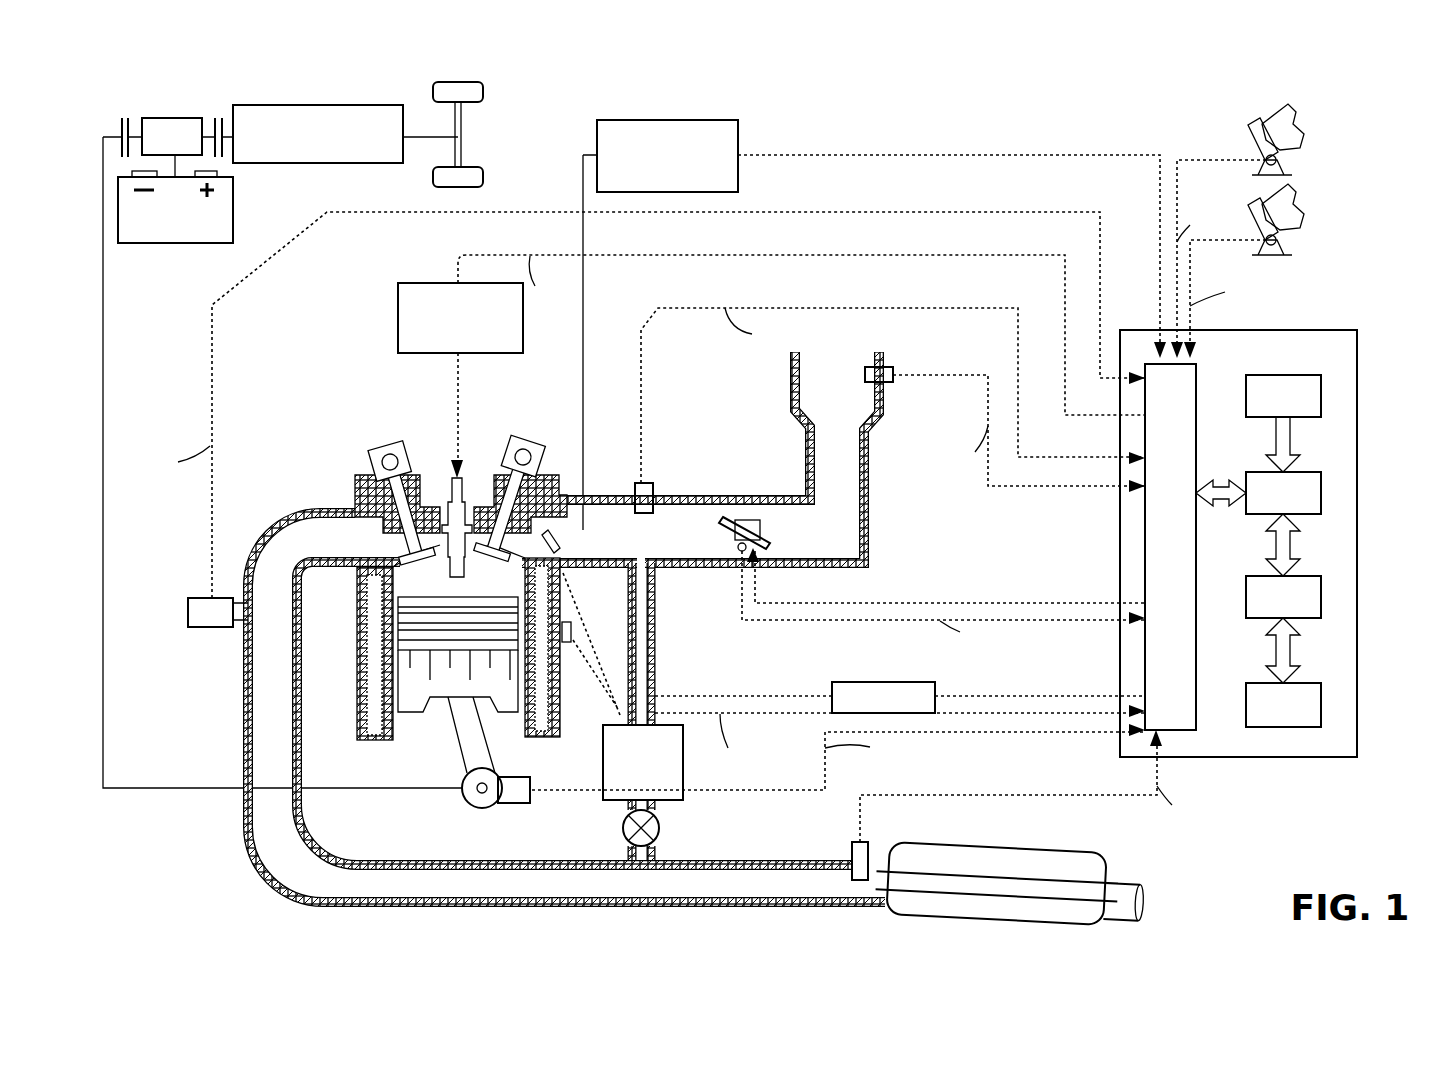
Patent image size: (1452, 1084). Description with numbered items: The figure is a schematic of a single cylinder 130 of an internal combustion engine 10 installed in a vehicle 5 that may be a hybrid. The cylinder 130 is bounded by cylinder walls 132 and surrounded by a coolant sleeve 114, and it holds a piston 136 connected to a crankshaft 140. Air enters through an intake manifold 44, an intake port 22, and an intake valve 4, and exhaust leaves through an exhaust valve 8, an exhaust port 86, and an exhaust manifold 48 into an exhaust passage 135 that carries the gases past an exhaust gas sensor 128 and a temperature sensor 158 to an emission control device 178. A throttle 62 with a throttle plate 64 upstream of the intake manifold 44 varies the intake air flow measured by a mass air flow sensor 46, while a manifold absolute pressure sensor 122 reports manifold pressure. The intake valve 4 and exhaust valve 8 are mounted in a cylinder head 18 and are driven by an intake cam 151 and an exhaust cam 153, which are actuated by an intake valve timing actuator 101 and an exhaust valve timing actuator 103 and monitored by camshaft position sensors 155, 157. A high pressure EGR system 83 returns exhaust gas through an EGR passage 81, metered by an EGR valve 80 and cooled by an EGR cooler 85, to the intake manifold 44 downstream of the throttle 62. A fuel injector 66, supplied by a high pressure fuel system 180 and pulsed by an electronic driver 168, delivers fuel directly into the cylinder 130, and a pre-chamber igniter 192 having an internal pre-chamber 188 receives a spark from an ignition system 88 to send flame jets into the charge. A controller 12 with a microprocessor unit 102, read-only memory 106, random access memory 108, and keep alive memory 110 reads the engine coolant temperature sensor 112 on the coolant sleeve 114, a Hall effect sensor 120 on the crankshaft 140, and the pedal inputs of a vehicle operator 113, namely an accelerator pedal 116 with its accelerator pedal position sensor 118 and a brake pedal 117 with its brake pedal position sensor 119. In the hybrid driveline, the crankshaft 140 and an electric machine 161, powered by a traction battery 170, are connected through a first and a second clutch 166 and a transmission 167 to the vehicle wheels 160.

The intake valve 4 is at (494, 520).
The vehicle 5 is at (1405, 88).
The exhaust valve 8 is at (366, 526).
The internal combustion engine 10 is at (312, 418).
The controller 12 is at (1357, 336).
The cylinder head 18 is at (355, 481).
The intake port 22 is at (590, 541).
The intake manifold 44 is at (670, 541).
The mass air flow sensor 46 is at (885, 367).
The exhaust manifold 48 is at (263, 714).
The throttle 62 is at (753, 518).
The throttle plate 64 is at (727, 519).
The fuel injector 66 is at (522, 566).
The EGR valve 80 is at (659, 828).
The EGR passage 81 is at (628, 608).
The high pressure EGR system 83 is at (667, 668).
The EGR cooler 85 is at (683, 758).
The exhaust port 86 is at (306, 551).
The ignition system 88 is at (430, 283).
The intake valve timing actuator 101 is at (540, 450).
The microprocessor unit 102 is at (1321, 486).
The exhaust valve timing actuator 103 is at (376, 446).
The read-only memory 106 is at (1321, 386).
The random access memory 108 is at (1200, 366).
The keep alive memory 110 is at (1321, 701).
The ECT sensor 112 is at (567, 643).
The vehicle operator 113 is at (1300, 204).
The coolant sleeve 114 is at (560, 646).
The accelerator pedal 116 is at (1257, 132).
The brake pedal 117 is at (1257, 212).
The accelerator pedal position sensor 118 is at (1278, 161).
The brake pedal position sensor 119 is at (1278, 241).
The Hall effect sensor 120 is at (518, 803).
The MAP sensor 122 is at (645, 483).
The exhaust gas sensor 128 is at (188, 606).
The cylinder 130 is at (452, 587).
The cylinder walls 132 is at (400, 725).
The exhaust passage 135 is at (580, 908).
The piston 136 is at (440, 700).
The crankshaft 140 is at (468, 804).
The intake cam 151 is at (522, 446).
The exhaust cam 153 is at (392, 445).
The camshaft position sensor 155 is at (548, 463).
The camshaft position sensor 157 is at (381, 462).
The temperature sensor 158 is at (868, 846).
The vehicle wheels 160 is at (472, 100).
The electric machine 161 is at (166, 118).
The clutch 166 is at (216, 126).
The transmission 167 is at (380, 164).
The electronic driver 168 is at (836, 682).
The traction battery 170 is at (186, 243).
The emission control device 178 is at (1075, 852).
The high pressure fuel system 180 is at (705, 120).
The pre-chamber 188 is at (513, 570).
The pre-chamber igniter 192 is at (450, 492).